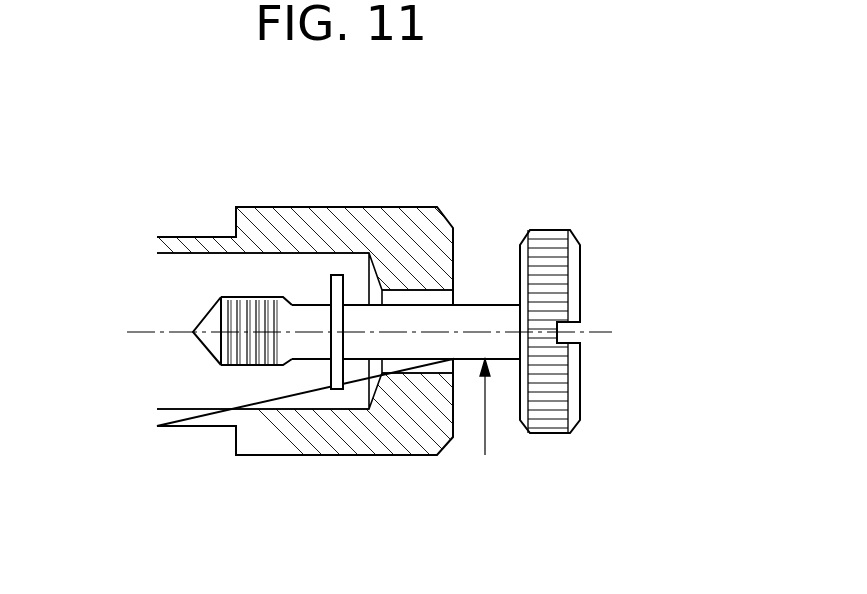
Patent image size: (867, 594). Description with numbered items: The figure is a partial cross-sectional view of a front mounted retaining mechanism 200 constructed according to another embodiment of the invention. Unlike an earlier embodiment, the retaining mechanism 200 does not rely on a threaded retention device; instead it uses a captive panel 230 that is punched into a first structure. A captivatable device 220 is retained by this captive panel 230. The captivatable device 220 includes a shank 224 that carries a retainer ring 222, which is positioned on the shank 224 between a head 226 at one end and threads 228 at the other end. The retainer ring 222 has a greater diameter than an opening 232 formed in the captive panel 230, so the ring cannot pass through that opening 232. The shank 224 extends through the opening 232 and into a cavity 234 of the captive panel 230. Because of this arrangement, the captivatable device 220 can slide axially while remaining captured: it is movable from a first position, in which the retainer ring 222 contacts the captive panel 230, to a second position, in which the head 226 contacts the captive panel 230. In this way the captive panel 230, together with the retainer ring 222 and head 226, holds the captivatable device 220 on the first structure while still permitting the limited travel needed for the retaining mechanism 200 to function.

The front mounted retaining mechanism 200 is at (596, 148).
The captivatable device 220 is at (486, 424).
The retainer ring 222 is at (332, 373).
The shank 224 is at (482, 318).
The head 226 is at (555, 295).
The threads 228 is at (221, 318).
The captive panel 230 is at (388, 430).
The opening 232 is at (428, 298).
The cavity 234 is at (172, 377).